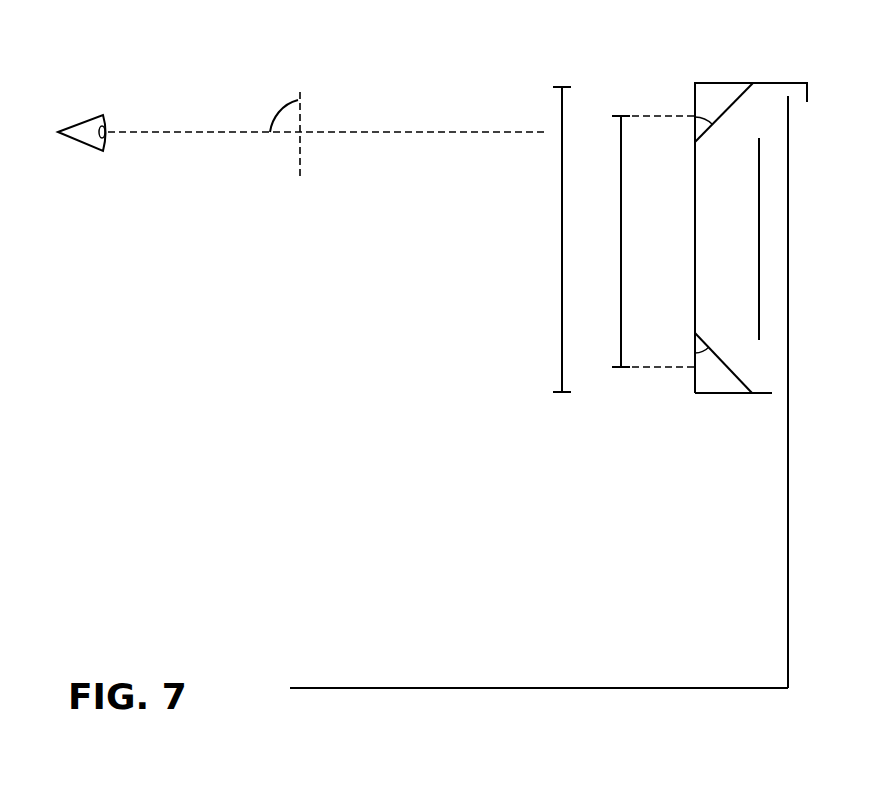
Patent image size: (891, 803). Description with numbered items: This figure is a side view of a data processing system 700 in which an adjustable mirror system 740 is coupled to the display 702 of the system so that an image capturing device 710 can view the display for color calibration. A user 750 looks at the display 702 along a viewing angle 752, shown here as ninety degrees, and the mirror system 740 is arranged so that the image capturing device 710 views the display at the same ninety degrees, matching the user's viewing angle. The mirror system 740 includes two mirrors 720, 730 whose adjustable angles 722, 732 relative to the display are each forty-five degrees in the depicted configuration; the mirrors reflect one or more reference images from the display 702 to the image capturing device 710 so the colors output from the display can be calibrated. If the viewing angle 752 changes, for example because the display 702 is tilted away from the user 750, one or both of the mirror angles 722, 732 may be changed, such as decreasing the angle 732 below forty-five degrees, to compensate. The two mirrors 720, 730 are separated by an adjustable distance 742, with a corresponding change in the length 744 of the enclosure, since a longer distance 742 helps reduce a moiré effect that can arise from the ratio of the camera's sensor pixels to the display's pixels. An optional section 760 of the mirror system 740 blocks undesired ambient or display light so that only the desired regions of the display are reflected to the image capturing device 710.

The data processing system 700 is at (538, 690).
The display 702 is at (788, 220).
The image capturing device 710 is at (778, 114).
The mirror 720 is at (722, 114).
The adjustable angle 722 is at (712, 117).
The mirror 730 is at (728, 367).
The adjustable angle 732 is at (708, 362).
The adjustable mirror system 740 is at (695, 256).
The distance 742 is at (621, 230).
The length 744 is at (562, 283).
The user 750 is at (80, 118).
The viewing angle 752 is at (276, 110).
The optional section 760 is at (759, 252).